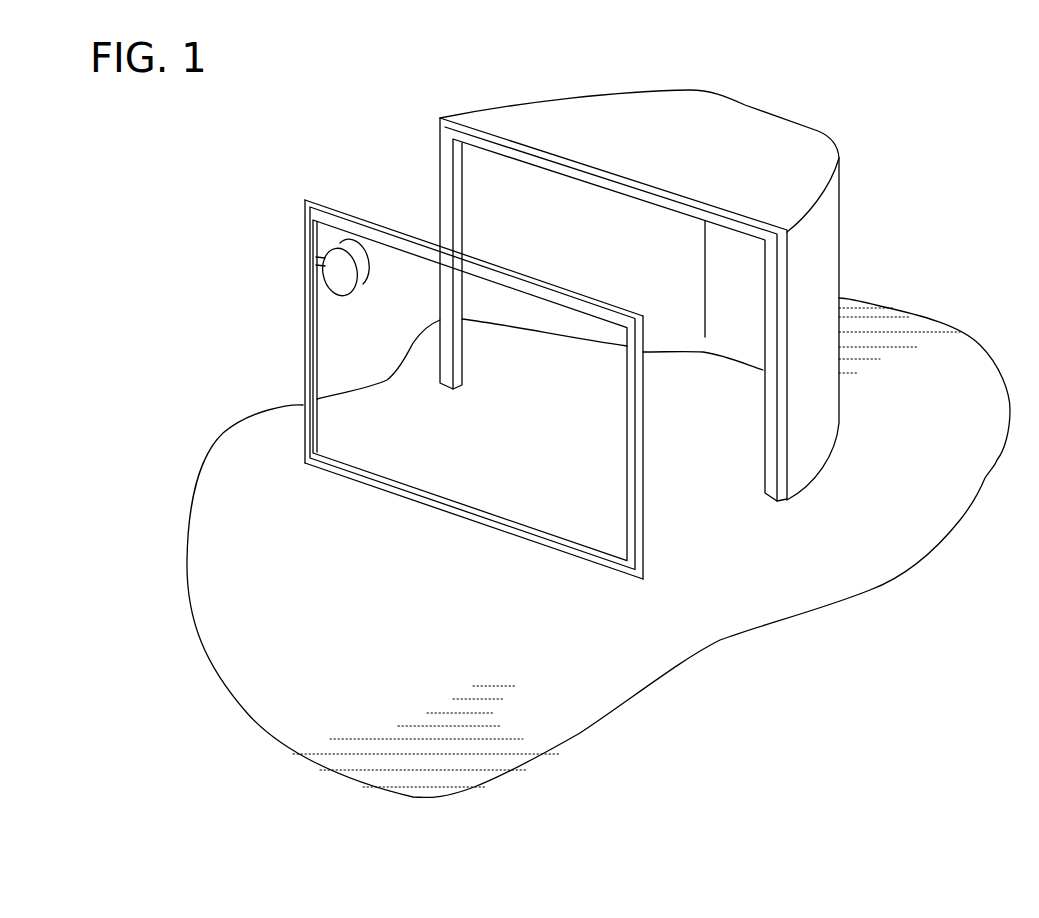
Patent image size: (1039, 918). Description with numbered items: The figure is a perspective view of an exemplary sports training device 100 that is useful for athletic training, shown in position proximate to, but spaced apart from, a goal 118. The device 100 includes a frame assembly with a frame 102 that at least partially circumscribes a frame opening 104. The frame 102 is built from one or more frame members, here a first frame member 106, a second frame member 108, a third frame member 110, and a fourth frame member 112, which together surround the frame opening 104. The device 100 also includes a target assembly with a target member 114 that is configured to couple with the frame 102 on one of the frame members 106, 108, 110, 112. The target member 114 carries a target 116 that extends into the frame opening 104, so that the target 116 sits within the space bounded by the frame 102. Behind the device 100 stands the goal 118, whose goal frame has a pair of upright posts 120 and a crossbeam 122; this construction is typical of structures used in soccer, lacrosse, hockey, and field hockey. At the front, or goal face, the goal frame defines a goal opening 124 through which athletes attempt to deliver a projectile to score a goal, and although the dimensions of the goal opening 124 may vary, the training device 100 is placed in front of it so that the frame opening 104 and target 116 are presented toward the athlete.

The sports training device 100 is at (278, 167).
The frame 102 is at (260, 185).
The frame opening 104 is at (337, 443).
The first frame member 106 is at (310, 358).
The second frame member 108 is at (643, 550).
The third frame member 110 is at (357, 222).
The fourth frame member 112 is at (410, 493).
The target member 114 is at (355, 313).
The target 116 is at (342, 277).
The goal 118 is at (676, 74).
The upright posts 120 is at (448, 165).
The crossbeam 122 is at (548, 152).
The goal opening 124 is at (628, 230).